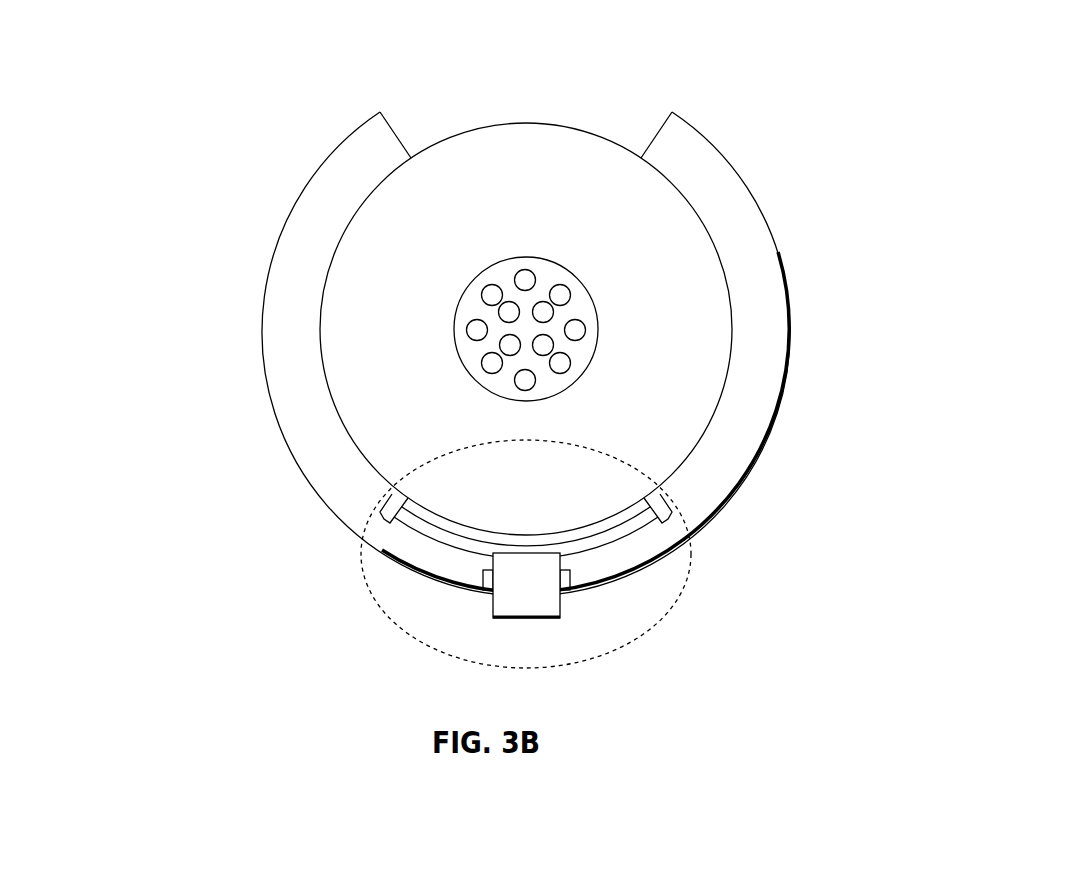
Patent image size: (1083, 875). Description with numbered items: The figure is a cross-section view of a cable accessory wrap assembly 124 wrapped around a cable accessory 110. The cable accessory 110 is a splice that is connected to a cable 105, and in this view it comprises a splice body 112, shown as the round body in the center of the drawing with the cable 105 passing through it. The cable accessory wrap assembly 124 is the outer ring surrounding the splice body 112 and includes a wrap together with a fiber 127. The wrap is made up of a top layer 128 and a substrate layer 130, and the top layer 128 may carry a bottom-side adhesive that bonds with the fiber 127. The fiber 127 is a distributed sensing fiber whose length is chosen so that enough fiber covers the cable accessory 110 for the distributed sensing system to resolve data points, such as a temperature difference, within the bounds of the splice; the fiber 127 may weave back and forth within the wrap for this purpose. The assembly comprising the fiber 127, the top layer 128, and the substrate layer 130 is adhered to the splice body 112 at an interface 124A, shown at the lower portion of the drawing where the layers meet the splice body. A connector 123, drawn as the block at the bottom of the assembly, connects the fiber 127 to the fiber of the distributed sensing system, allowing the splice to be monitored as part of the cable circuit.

The cable 105 is at (476, 334).
The cable accessory 110 is at (578, 148).
The splice body 112 is at (493, 163).
The connector 123 is at (530, 590).
The cable accessory wrap assembly 124 is at (747, 235).
The interface 124A is at (454, 517).
The fiber 127 is at (433, 545).
The top layer 128 is at (465, 575).
The substrate layer 130 is at (630, 522).